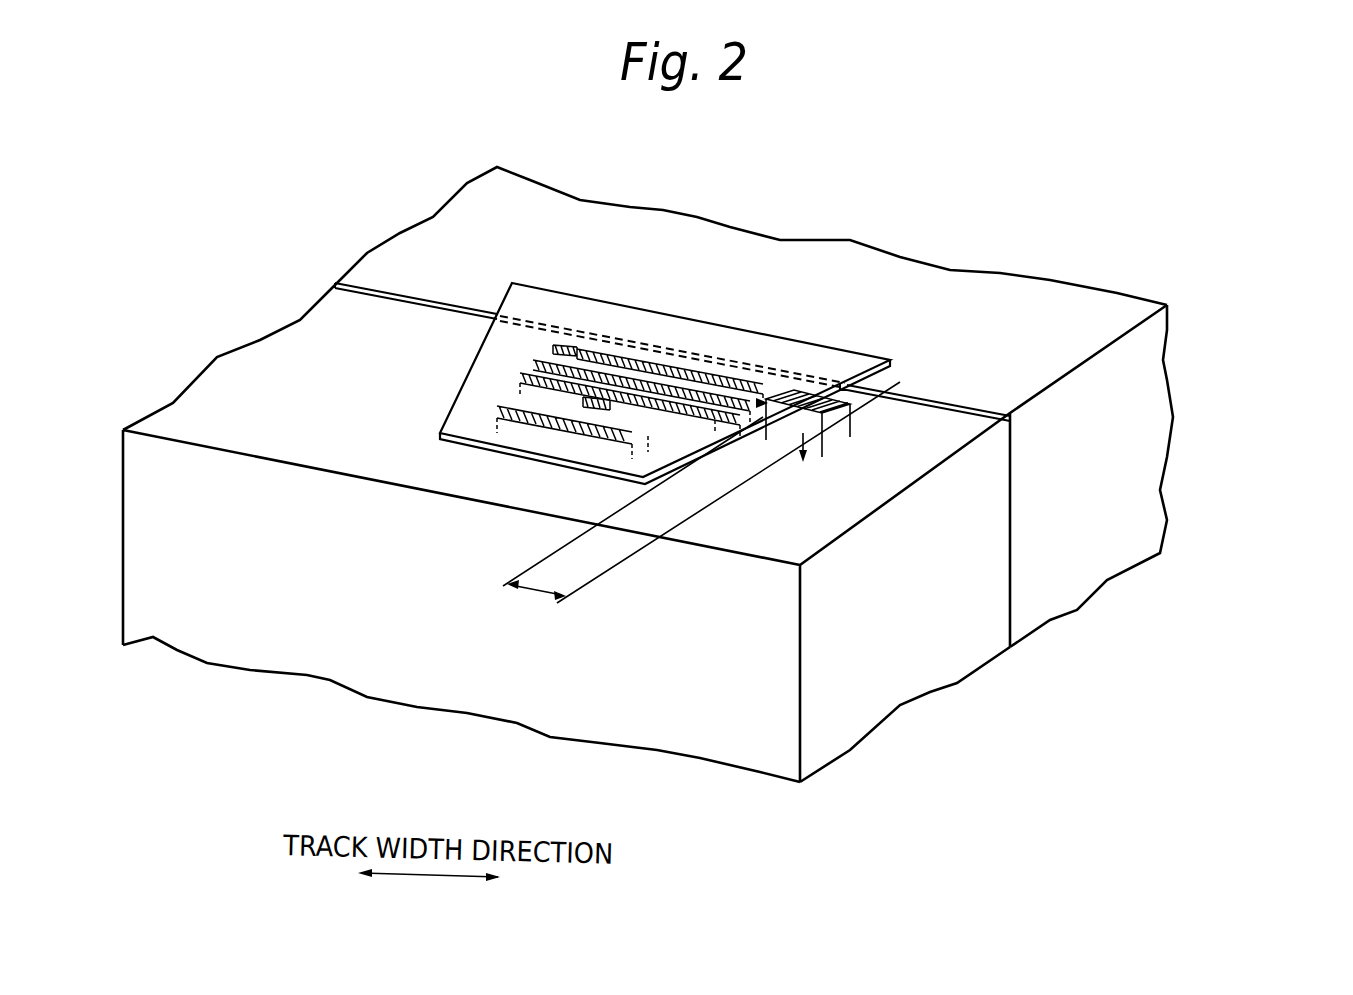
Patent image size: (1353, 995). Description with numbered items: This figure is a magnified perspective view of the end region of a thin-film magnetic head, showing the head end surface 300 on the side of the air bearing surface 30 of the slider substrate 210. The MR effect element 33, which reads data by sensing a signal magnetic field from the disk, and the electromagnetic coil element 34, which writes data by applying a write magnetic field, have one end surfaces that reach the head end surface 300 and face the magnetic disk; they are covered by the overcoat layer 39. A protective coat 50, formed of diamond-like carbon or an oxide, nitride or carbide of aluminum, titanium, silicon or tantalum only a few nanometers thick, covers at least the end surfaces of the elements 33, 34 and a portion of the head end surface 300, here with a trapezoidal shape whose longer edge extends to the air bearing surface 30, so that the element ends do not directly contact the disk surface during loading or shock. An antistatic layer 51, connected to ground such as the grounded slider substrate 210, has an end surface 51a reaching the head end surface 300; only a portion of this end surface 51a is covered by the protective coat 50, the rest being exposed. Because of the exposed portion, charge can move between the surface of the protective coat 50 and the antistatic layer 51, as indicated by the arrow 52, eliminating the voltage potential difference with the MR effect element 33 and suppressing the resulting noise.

The air bearing surface 30 is at (1097, 303).
The head end surface 300 is at (262, 380).
The overcoat layer 39 is at (923, 633).
The slider substrate 210 is at (1133, 418).
The protective coat 50 is at (622, 320).
The MR effect element 33 is at (562, 354).
The electromagnetic coil element 34 is at (548, 403).
The arrow 52 is at (793, 395).
The end surface of the antistatic layer 51a is at (820, 407).
The antistatic layer 51 is at (900, 382).